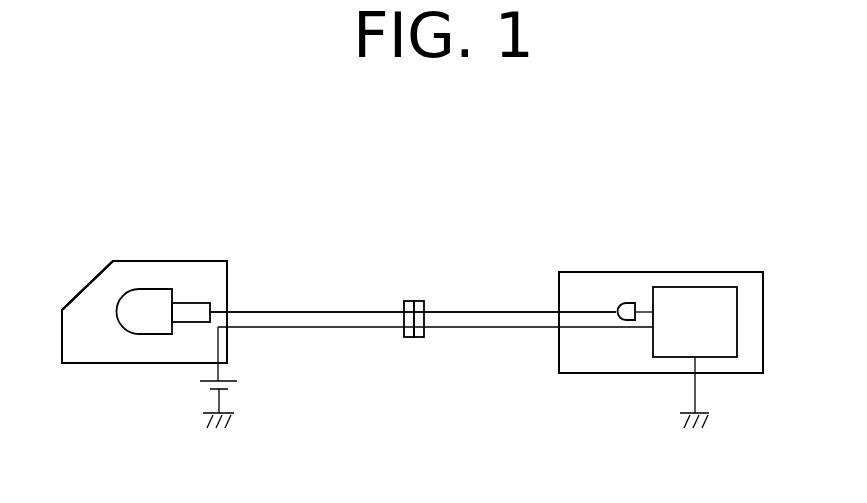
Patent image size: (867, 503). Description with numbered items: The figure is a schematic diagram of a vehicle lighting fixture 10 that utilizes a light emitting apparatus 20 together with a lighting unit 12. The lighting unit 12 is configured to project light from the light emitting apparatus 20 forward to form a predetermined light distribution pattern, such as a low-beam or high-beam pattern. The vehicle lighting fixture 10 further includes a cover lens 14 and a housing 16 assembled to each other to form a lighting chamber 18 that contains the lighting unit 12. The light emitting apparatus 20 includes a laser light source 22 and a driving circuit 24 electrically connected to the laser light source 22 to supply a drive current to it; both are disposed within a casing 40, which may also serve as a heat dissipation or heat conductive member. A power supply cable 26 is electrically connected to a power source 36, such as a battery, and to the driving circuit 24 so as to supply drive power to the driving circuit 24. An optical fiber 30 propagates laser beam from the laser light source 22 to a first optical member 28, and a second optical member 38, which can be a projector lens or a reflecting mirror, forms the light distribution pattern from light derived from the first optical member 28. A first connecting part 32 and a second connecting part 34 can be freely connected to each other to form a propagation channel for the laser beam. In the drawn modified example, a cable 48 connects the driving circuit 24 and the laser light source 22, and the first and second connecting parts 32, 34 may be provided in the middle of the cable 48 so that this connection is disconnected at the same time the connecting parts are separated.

The vehicle lighting fixture 10 is at (191, 165).
The lighting unit 12 is at (93, 247).
The cover lens 14 is at (82, 291).
The housing 16 is at (202, 261).
The lighting chamber 18 is at (84, 342).
The light emitting apparatus 20 is at (497, 206).
The laser light source 22 is at (630, 303).
The driving circuit 24 is at (697, 290).
The power supply cable 26 is at (462, 327).
The first optical member 28 is at (193, 303).
The optical fiber 30 is at (508, 312).
The first connecting part 32 is at (420, 301).
The second connecting part 34 is at (408, 301).
The power source 36 is at (208, 388).
The second optical member 38 is at (155, 289).
The casing 40 is at (585, 272).
The cable 48 is at (645, 310).